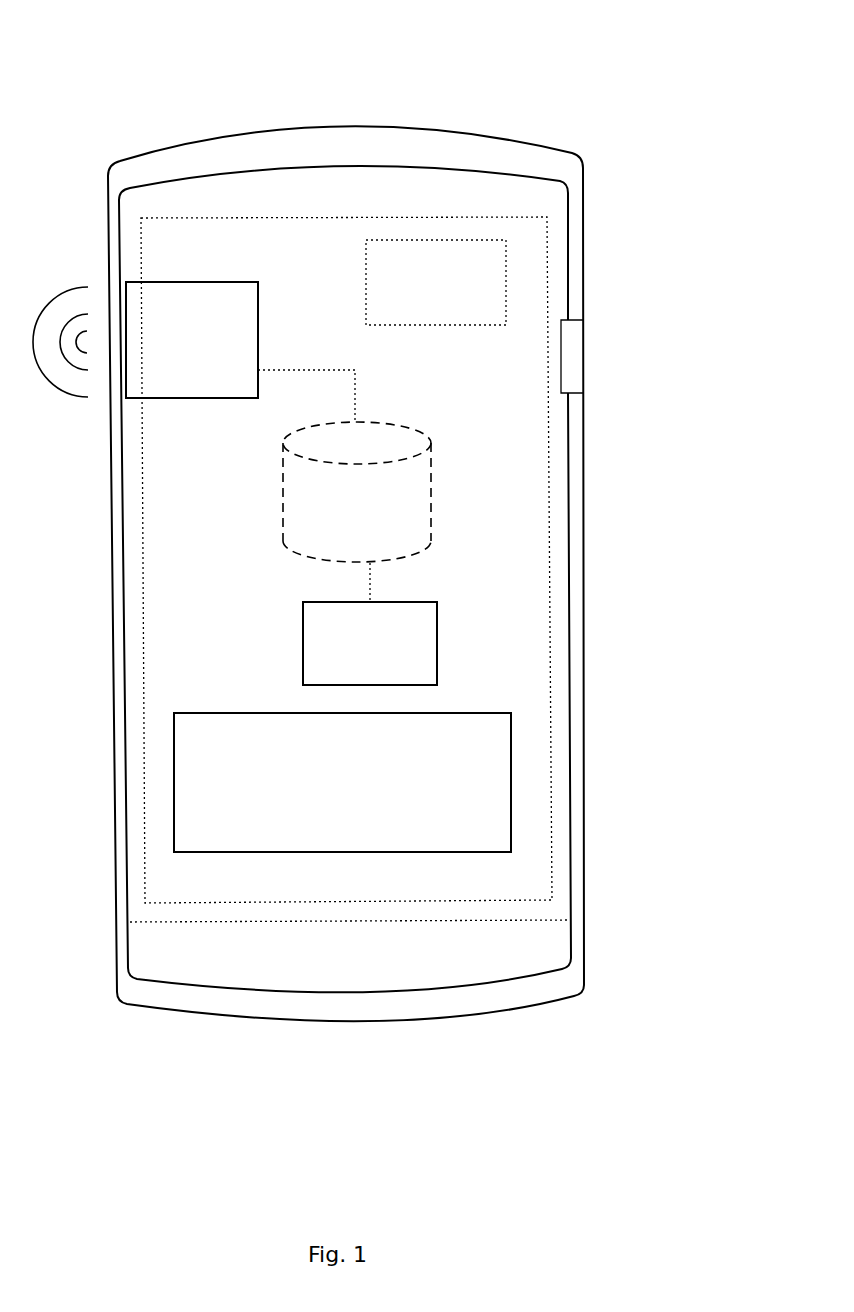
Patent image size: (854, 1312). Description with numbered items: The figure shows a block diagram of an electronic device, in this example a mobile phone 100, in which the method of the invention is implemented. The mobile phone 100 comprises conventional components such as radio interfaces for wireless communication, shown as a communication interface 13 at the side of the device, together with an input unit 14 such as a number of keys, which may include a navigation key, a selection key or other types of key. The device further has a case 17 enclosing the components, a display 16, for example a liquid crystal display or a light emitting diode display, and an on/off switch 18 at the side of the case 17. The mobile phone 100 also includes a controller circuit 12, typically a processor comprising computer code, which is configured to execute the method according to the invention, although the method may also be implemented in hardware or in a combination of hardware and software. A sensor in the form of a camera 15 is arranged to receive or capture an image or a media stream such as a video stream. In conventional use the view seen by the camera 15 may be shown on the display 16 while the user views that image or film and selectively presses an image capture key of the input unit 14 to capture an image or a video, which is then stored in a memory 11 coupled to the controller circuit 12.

The mobile phone 100 is at (384, 519).
The memory 11 is at (330, 510).
The controller circuit 12 is at (339, 628).
The communication interface 13 is at (162, 323).
The input unit 14 is at (210, 781).
The camera 15 is at (401, 280).
The display 16 is at (393, 195).
The case 17 is at (585, 195).
The on/off switch 18 is at (583, 360).